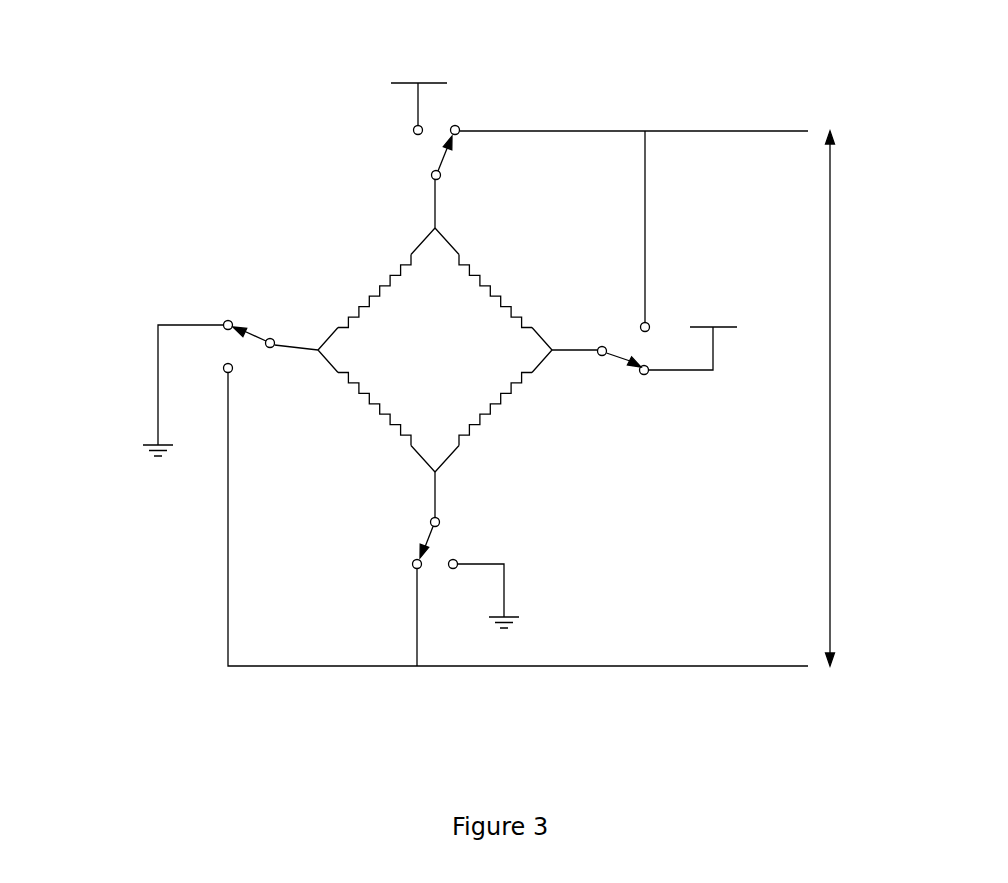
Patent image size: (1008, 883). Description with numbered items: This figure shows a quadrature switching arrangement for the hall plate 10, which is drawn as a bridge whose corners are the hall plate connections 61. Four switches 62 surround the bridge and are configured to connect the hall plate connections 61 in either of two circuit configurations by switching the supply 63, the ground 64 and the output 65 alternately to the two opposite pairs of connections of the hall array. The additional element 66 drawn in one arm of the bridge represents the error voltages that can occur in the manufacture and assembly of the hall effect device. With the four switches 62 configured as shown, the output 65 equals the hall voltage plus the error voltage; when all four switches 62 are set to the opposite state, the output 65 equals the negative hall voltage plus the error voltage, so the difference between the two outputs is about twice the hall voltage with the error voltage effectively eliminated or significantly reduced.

The hall plate arrangement 10 is at (222, 105).
The hall plate connections 61 is at (378, 287).
The switches 62 is at (626, 338).
The supply 63 is at (738, 318).
The ground 64 is at (487, 607).
The output 65 is at (849, 347).
The additional element 66 is at (457, 264).